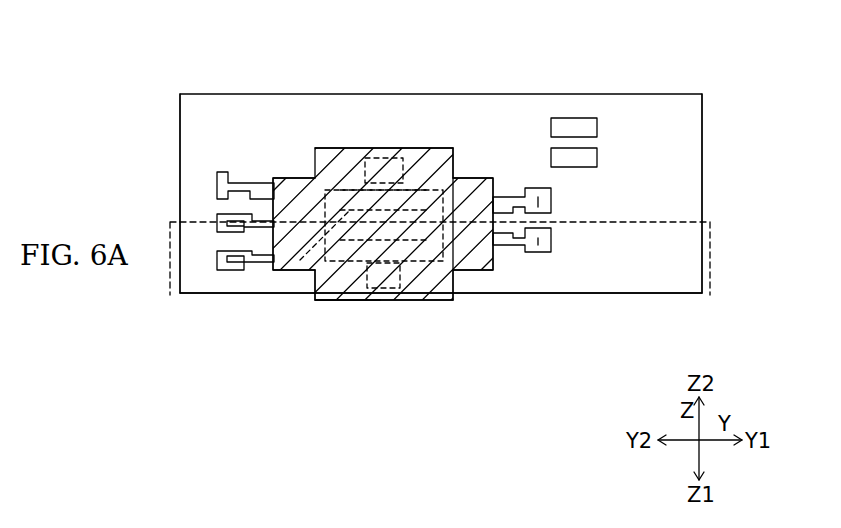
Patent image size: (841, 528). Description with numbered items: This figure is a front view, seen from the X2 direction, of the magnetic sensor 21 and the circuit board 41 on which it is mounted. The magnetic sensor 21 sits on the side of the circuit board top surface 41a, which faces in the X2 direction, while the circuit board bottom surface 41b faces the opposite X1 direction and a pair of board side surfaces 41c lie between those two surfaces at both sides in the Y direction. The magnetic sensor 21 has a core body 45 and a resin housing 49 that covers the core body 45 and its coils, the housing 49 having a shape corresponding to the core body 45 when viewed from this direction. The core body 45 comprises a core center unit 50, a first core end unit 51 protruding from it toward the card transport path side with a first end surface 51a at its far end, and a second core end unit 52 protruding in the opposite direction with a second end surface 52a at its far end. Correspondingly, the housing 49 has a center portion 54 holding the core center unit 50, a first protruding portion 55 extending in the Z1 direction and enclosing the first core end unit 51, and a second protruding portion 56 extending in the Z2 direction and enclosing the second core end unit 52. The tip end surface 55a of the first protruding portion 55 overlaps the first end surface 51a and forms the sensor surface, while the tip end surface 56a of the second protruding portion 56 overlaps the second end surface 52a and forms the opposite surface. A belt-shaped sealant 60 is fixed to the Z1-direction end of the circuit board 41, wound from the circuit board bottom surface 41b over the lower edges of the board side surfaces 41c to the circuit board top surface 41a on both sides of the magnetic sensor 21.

The magnetic sensor 21 is at (423, 140).
The circuit board 41 is at (672, 88).
The circuit board top surface 41a is at (687, 158).
The circuit board bottom surface 41b is at (702, 205).
The board side surfaces 41c is at (180, 150).
The core body 45 is at (351, 170).
The housing 49 is at (318, 290).
The core center unit 50 is at (300, 260).
The first core end unit 51 is at (378, 297).
The first end surface 51a is at (385, 298).
The second core end unit 52 is at (390, 157).
The second end surface 52a is at (389, 160).
The center portion 54 is at (473, 250).
The first protruding portion 55 is at (430, 285).
The tip end surface 55a is at (350, 301).
The second protruding portion 56 is at (455, 162).
The tip end surface 56a is at (436, 146).
The sealant 60 is at (660, 254).